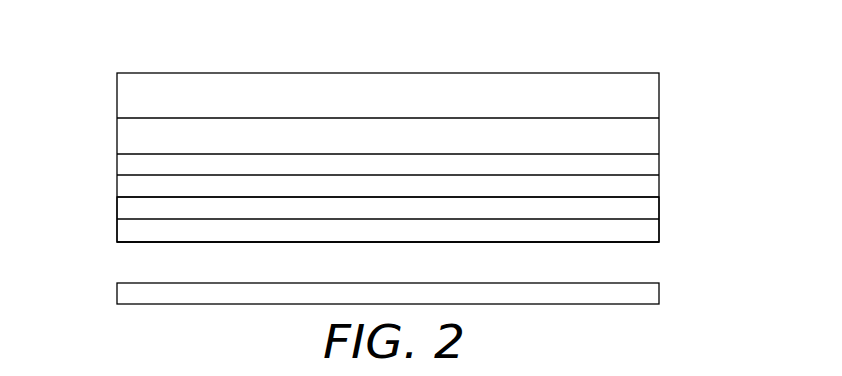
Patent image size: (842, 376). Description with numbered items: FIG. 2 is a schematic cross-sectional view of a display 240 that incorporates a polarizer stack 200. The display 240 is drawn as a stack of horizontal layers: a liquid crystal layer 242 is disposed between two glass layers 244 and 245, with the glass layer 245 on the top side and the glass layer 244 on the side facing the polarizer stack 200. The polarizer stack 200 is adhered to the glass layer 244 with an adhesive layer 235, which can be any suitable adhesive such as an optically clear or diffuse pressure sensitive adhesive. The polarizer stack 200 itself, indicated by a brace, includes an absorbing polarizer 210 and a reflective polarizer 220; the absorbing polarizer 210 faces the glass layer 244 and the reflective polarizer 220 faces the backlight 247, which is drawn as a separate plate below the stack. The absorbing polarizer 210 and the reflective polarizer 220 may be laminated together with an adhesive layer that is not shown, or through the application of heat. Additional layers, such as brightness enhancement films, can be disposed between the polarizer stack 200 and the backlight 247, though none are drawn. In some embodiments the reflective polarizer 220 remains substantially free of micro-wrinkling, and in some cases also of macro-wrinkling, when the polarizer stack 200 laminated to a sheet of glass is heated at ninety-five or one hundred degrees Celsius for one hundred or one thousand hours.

The polarizer stack 200 is at (108, 200).
The absorbing polarizer 210 is at (648, 205).
The reflective polarizer 220 is at (650, 231).
The adhesive layer 235 is at (126, 183).
The display 240 is at (86, 37).
The liquid crystal layer 242 is at (128, 127).
The glass layer 244 is at (128, 160).
The glass layer 245 is at (128, 88).
The backlight 247 is at (650, 294).